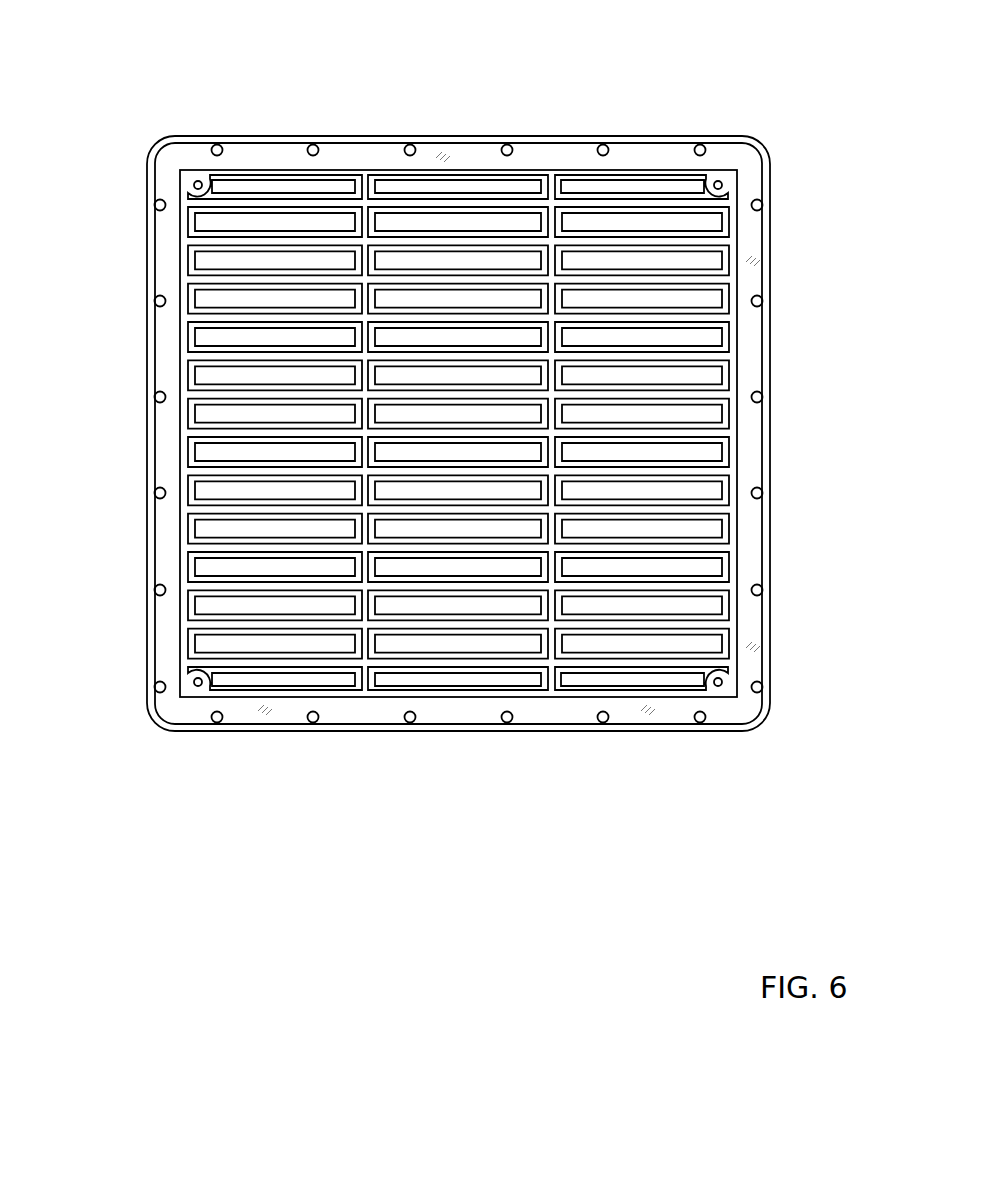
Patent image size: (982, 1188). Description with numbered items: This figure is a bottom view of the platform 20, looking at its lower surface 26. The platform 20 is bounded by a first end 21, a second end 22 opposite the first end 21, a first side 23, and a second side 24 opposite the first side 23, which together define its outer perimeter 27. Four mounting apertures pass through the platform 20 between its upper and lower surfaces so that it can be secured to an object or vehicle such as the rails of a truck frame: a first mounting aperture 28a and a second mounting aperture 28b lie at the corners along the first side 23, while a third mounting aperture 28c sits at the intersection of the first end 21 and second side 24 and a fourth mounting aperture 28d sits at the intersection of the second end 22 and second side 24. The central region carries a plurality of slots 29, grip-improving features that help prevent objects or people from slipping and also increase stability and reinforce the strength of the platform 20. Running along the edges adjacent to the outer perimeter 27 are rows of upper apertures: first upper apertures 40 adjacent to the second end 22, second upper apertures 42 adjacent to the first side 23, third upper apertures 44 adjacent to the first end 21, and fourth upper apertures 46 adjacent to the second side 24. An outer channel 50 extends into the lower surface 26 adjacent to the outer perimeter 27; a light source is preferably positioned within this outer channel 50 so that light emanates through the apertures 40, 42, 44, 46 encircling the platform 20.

The platform 20 is at (576, 135).
The first end 21 is at (675, 136).
The second end 22 is at (592, 731).
The first side 23 is at (770, 615).
The second side 24 is at (147, 627).
The lower surface 26 is at (448, 432).
The outer perimeter 27 is at (147, 265).
The first mounting aperture 28a is at (722, 685).
The second mounting aperture 28b is at (722, 181).
The third mounting aperture 28c is at (194, 181).
The fourth mounting aperture 28d is at (194, 686).
The slots 29 is at (687, 332).
The first upper apertures 40 is at (313, 723).
The second upper apertures 42 is at (763, 493).
The third upper apertures 44 is at (155, 493).
The fourth upper apertures 46 is at (410, 144).
The outer channel 50 is at (462, 160).